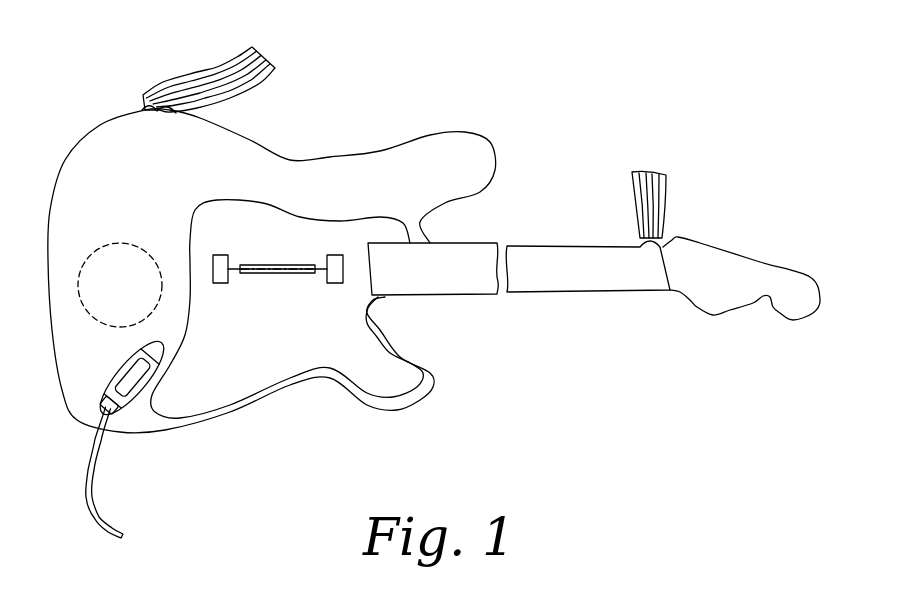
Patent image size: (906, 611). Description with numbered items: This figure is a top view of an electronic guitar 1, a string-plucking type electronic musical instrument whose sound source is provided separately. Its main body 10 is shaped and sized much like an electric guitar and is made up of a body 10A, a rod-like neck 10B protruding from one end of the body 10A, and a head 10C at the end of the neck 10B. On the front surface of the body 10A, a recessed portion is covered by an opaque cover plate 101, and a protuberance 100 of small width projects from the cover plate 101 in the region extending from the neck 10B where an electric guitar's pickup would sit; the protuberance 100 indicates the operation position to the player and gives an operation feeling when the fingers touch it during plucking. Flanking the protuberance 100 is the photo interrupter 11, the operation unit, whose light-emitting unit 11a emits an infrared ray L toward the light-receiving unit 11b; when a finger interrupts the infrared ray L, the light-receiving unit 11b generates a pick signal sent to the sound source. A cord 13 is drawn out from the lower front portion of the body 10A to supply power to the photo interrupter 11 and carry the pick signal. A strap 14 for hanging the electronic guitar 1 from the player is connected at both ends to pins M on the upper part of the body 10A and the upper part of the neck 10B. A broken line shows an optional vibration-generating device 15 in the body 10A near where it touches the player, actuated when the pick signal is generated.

The electronic guitar 1 is at (570, 84).
The main body 10 is at (272, 251).
The body 10A is at (415, 133).
The neck 10B is at (560, 294).
The head 10C is at (753, 261).
The cover plate 101 is at (222, 213).
The photo interrupter 11 is at (261, 263).
The light-emitting unit 11a is at (336, 254).
The light-receiving unit 11b is at (213, 266).
The protuberance 100 is at (283, 275).
The infrared ray L is at (231, 257).
The cord 13 is at (97, 473).
The strap 14 is at (205, 72).
The vibration-generating device 15 is at (97, 248).
The pins M is at (140, 107).